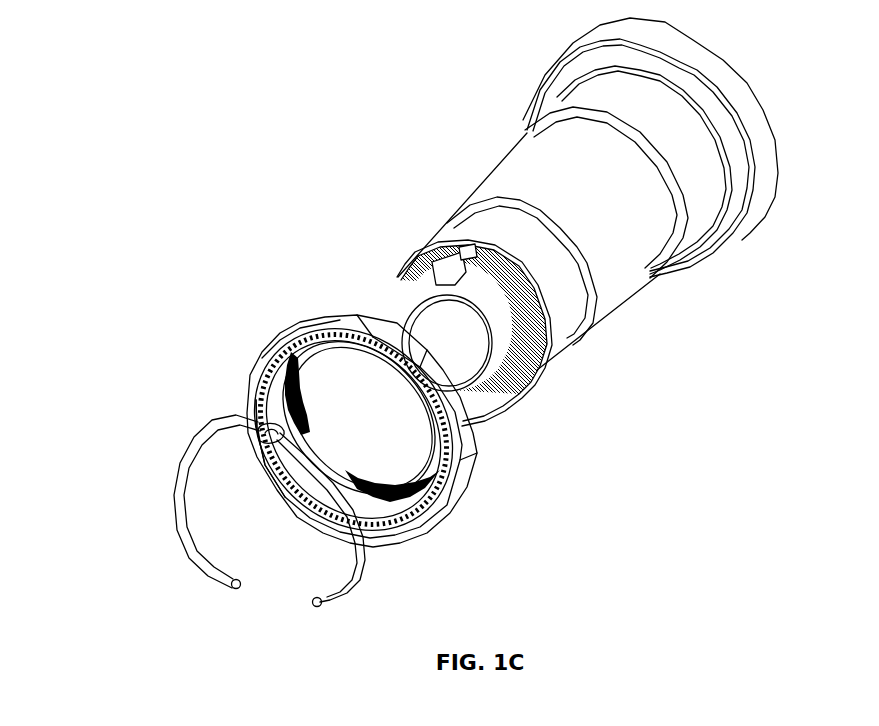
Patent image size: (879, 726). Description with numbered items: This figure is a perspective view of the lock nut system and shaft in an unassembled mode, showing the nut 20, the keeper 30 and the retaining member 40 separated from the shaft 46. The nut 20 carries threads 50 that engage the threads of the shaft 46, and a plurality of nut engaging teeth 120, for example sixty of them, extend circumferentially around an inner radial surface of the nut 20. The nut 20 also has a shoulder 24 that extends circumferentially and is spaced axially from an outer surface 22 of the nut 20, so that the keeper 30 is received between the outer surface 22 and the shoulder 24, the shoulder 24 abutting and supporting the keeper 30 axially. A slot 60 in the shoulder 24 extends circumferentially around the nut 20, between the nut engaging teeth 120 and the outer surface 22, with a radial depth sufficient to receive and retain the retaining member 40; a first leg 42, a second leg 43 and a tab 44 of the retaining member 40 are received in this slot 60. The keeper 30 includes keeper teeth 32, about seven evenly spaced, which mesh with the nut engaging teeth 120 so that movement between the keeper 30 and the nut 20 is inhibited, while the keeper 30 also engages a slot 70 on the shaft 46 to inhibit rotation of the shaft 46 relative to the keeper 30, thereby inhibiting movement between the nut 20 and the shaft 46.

The nut 20 is at (467, 488).
The outer surface 22 is at (275, 488).
The shoulder 24 is at (270, 357).
The keeper 30 is at (270, 427).
The keeper teeth 32 is at (307, 428).
The retaining member 40 is at (195, 442).
The first leg 42 is at (208, 568).
The second leg 43 is at (332, 602).
The tab 44 is at (193, 550).
The shaft 46 is at (537, 380).
The threads 50 is at (392, 497).
The slot 60 is at (312, 512).
The slot 70 is at (443, 262).
The nut engaging teeth 120 is at (390, 522).